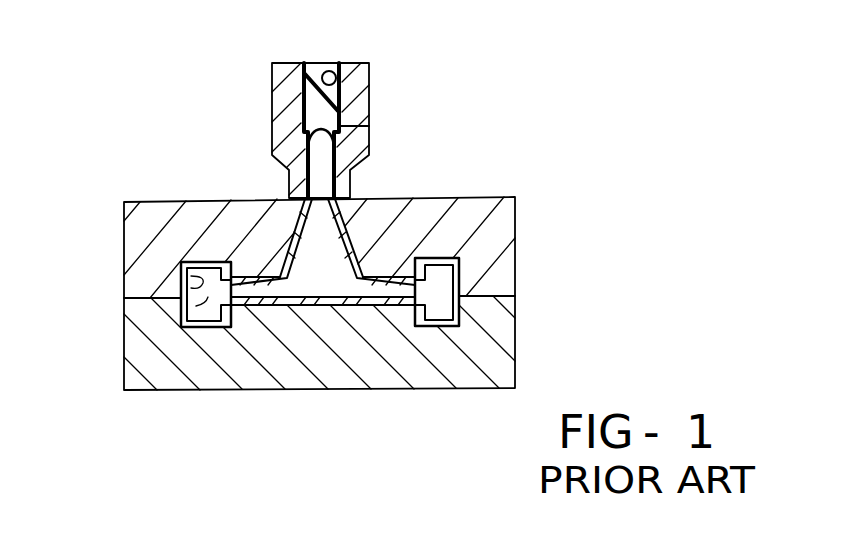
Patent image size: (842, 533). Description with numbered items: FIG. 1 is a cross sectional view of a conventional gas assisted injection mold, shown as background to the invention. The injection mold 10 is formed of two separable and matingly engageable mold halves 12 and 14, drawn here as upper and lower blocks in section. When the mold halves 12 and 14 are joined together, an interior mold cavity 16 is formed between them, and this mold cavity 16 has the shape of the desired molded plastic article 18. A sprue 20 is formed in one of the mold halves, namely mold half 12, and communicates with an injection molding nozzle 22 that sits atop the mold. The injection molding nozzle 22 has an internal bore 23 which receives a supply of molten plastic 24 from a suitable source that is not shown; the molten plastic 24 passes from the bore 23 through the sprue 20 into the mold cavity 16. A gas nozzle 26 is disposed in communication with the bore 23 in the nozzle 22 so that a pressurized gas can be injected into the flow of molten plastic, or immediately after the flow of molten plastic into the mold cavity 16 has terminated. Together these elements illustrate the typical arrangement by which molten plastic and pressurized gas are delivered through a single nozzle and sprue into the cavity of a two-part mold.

The injection mold 10 is at (130, 193).
The mold half 12 is at (133, 218).
The mold half 14 is at (155, 365).
The mold cavity 16 is at (188, 283).
The molded plastic article 18 is at (200, 303).
The sprue 20 is at (293, 237).
The injection molding nozzle 22 is at (280, 107).
The internal bore 23 is at (339, 63).
The molten plastic 24 is at (315, 70).
The gas nozzle 26 is at (369, 124).